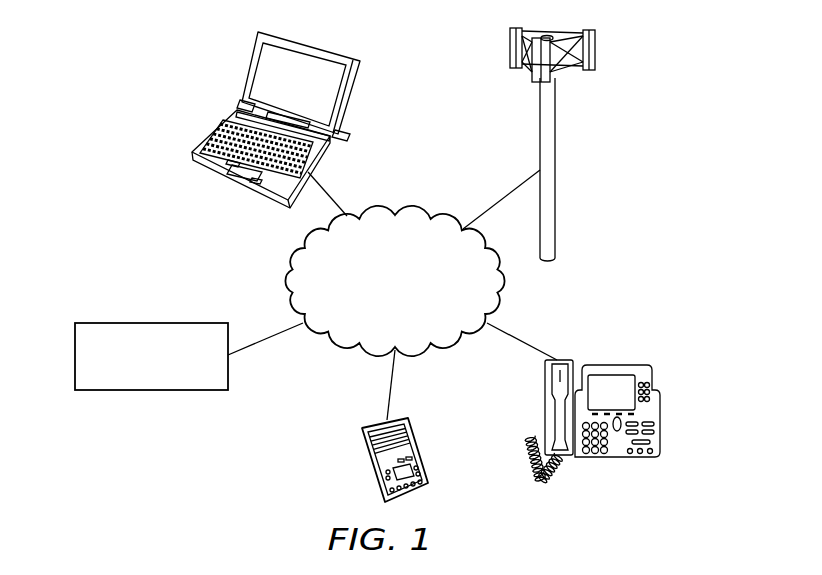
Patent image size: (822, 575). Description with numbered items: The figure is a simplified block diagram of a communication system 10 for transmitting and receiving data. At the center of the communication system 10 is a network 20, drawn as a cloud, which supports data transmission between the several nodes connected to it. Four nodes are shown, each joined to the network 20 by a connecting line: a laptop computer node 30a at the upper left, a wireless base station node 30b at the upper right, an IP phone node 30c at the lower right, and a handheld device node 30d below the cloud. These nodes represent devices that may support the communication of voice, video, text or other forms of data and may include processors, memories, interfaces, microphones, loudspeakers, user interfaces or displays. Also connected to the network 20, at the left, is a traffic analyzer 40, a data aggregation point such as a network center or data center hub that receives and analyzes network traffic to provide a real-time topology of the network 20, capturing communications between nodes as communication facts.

The communication system 10 is at (684, 63).
The network 20 is at (407, 318).
The node 30a is at (210, 133).
The node 30b is at (556, 137).
The node 30c is at (660, 422).
The node 30d is at (370, 470).
The traffic analyzer 40 is at (75, 357).